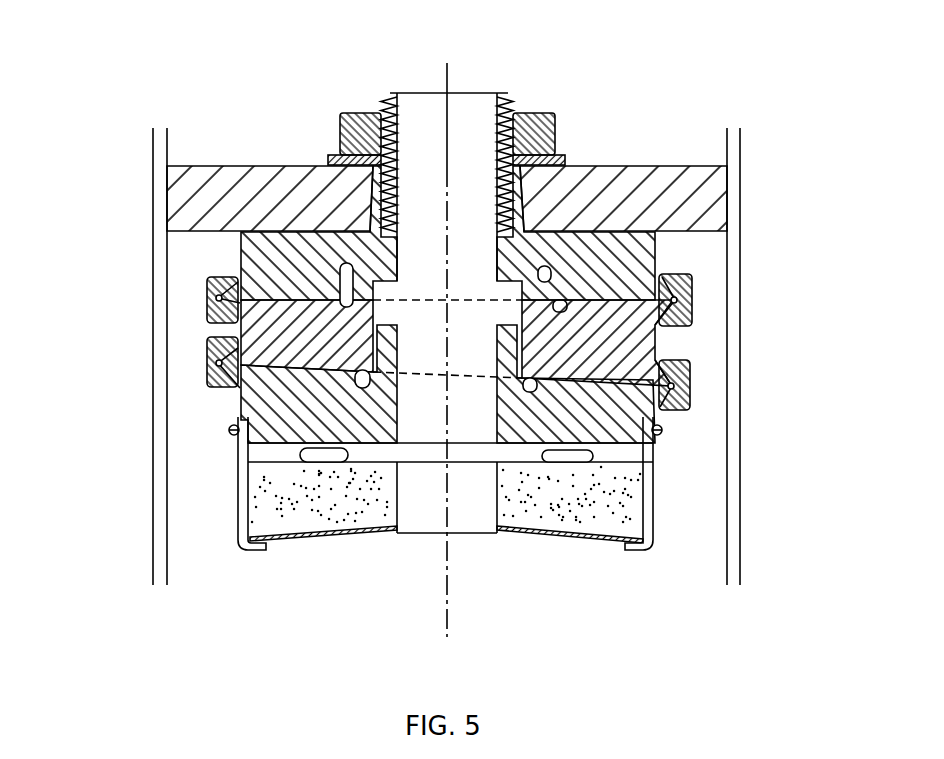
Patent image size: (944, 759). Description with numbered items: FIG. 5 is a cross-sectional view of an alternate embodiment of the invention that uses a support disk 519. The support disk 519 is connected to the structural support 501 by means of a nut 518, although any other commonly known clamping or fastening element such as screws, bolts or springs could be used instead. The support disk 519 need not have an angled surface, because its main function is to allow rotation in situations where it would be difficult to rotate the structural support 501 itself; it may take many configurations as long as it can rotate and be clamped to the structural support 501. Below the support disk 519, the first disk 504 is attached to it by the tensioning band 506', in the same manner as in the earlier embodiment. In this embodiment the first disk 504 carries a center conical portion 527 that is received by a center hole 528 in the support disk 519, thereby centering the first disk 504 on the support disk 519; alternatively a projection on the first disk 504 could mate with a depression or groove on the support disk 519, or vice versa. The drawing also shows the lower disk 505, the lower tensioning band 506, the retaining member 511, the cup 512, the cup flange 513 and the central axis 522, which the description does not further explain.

The structural support 501 is at (434, 156).
The center conical portion 527 is at (443, 276).
The nut 518 is at (515, 91).
The support disk 519 is at (240, 251).
The center hole 528 is at (256, 162).
The first disk 504 is at (660, 338).
The lower bushing 505 is at (240, 405).
The tensioning band 506' is at (531, 299).
The lower sealing ring 506 is at (528, 373).
The retaining disc 511 is at (565, 454).
The cup with granular fill 512 is at (446, 555).
The cup flange 513 is at (491, 530).
The centerline axis 522 is at (442, 625).